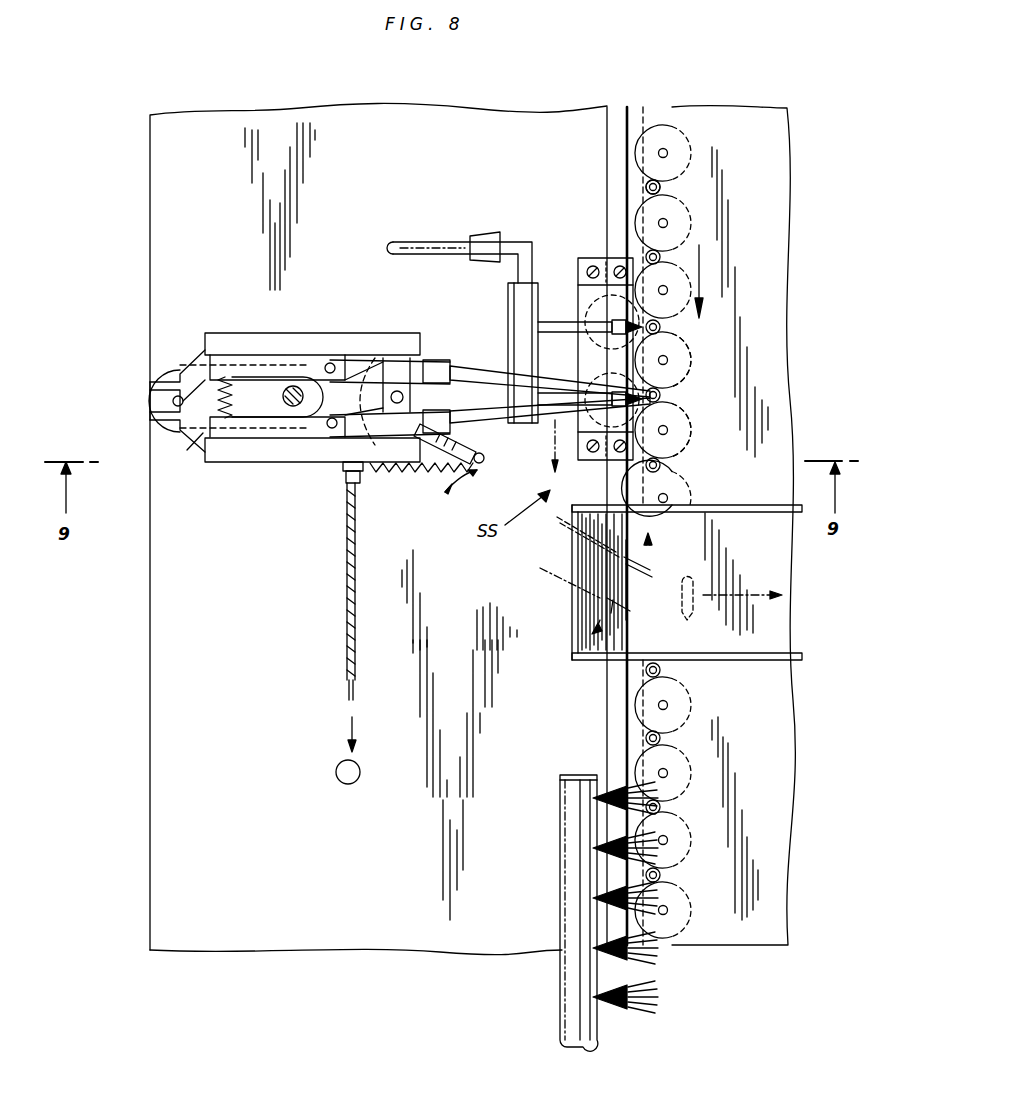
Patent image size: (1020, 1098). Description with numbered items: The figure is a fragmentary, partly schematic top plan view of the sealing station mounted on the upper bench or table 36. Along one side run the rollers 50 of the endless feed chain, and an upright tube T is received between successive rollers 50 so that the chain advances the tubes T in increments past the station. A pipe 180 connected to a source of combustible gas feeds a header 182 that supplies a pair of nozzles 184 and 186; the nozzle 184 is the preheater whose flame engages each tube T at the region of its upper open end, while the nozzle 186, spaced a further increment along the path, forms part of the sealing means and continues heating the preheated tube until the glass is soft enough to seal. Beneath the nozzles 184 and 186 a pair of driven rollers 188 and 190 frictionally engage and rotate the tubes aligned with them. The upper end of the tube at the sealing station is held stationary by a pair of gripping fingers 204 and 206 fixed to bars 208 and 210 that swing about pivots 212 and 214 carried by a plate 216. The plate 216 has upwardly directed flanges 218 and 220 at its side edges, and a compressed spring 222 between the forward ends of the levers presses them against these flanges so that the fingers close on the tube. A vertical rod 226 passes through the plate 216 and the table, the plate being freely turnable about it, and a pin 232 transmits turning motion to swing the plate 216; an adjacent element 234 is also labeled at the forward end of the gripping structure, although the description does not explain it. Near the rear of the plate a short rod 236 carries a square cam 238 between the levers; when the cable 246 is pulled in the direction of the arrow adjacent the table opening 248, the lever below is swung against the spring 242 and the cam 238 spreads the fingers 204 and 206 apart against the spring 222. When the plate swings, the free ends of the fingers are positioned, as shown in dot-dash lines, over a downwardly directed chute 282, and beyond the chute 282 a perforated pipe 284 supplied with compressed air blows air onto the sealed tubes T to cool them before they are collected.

The bench 36 is at (250, 766).
The rollers 50 is at (672, 182).
The tube T is at (650, 186).
The pipe 180 is at (430, 242).
The header 182 is at (508, 311).
The nozzle 184 is at (560, 322).
The nozzle 186 is at (575, 393).
The roller 188 is at (678, 340).
The roller 190 is at (686, 426).
The gripping finger 204 is at (490, 357).
The gripping finger 206 is at (497, 422).
The bar 208 is at (216, 352).
The bar 210 is at (240, 462).
The pivot 212 is at (329, 363).
The pivot 214 is at (332, 430).
The plate 216 is at (195, 452).
The flange 218 is at (236, 333).
The flange 220 is at (272, 437).
The compressed spring 222 is at (270, 397).
The rod 226 is at (284, 401).
The pin 232 is at (160, 408).
The upper jaw 234 is at (158, 387).
The rod 236 is at (540, 397).
The square cam 238 is at (397, 356).
The spring 242 is at (416, 473).
The cable 246 is at (347, 572).
The table opening 248 is at (360, 769).
The chute 282 is at (780, 552).
The pipe 284 is at (560, 905).